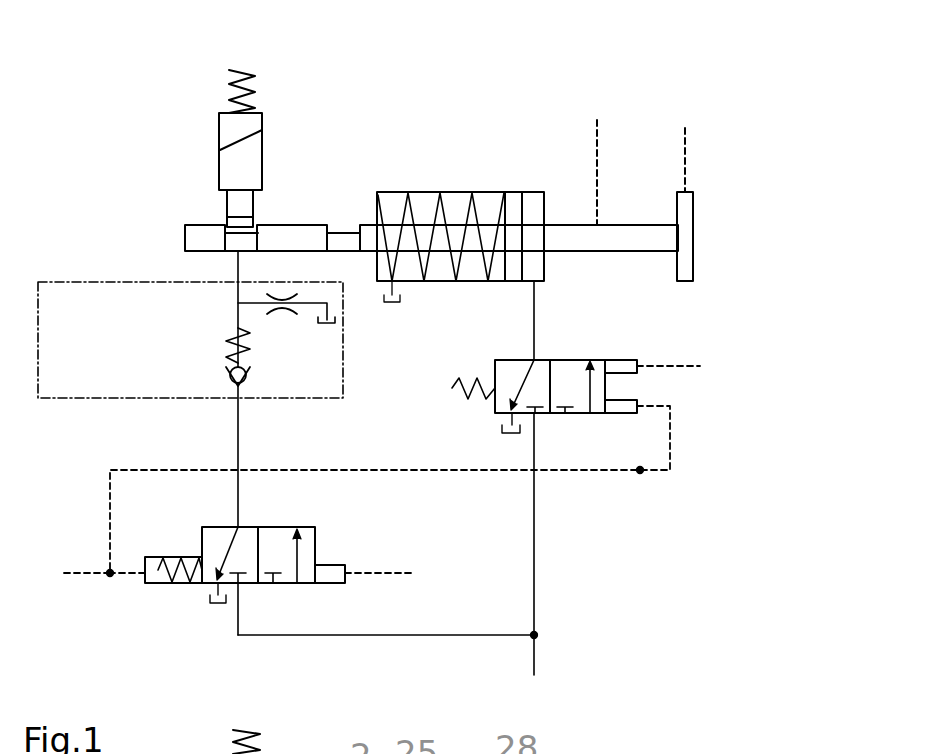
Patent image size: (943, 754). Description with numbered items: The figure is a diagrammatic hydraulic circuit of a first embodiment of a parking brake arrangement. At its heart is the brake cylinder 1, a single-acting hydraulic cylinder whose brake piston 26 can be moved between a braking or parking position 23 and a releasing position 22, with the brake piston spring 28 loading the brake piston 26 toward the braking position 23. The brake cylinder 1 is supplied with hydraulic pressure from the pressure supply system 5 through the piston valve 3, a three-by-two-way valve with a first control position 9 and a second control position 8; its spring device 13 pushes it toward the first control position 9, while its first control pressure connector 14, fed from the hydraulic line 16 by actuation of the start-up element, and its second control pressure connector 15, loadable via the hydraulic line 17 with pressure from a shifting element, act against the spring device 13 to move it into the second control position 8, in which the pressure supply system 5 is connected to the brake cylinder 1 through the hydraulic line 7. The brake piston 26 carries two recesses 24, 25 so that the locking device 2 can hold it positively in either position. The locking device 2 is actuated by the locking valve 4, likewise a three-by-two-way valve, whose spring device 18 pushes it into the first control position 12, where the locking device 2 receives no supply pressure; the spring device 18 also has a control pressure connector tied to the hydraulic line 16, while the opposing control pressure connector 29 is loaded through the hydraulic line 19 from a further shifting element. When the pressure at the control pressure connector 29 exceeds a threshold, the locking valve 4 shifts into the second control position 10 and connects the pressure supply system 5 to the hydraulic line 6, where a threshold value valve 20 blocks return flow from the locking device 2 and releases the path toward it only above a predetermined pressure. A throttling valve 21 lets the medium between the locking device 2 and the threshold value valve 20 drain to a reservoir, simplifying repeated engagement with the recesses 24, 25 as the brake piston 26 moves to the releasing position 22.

The brake cylinder 1 is at (457, 193).
The locking device 2 is at (262, 130).
The piston valve 3 is at (571, 344).
The locking valve 4 is at (325, 518).
The pressure supply system 5 is at (535, 583).
The hydraulic line 6 is at (237, 428).
The hydraulic line 7 is at (537, 305).
The second control position 8 is at (580, 417).
The first control position 9 is at (508, 355).
The second control position 10 is at (278, 527).
The first control position 12 is at (218, 523).
The spring device 13 is at (452, 405).
The first control pressure connector 14 is at (630, 393).
The second control pressure connector 15 is at (636, 357).
The hydraulic line 16 is at (640, 470).
The hydraulic line 17 is at (700, 366).
The spring device 18 is at (170, 583).
The hydraulic line 19 is at (373, 573).
The threshold value valve 20 is at (227, 352).
The throttling valve 21 is at (280, 317).
The releasing position 22 is at (601, 157).
The braking position 23 is at (676, 145).
The recess 24 is at (221, 217).
The recess 25 is at (353, 224).
The brake piston 26 is at (694, 232).
The brake piston spring 28 is at (412, 212).
The control pressure connector 29 is at (345, 583).